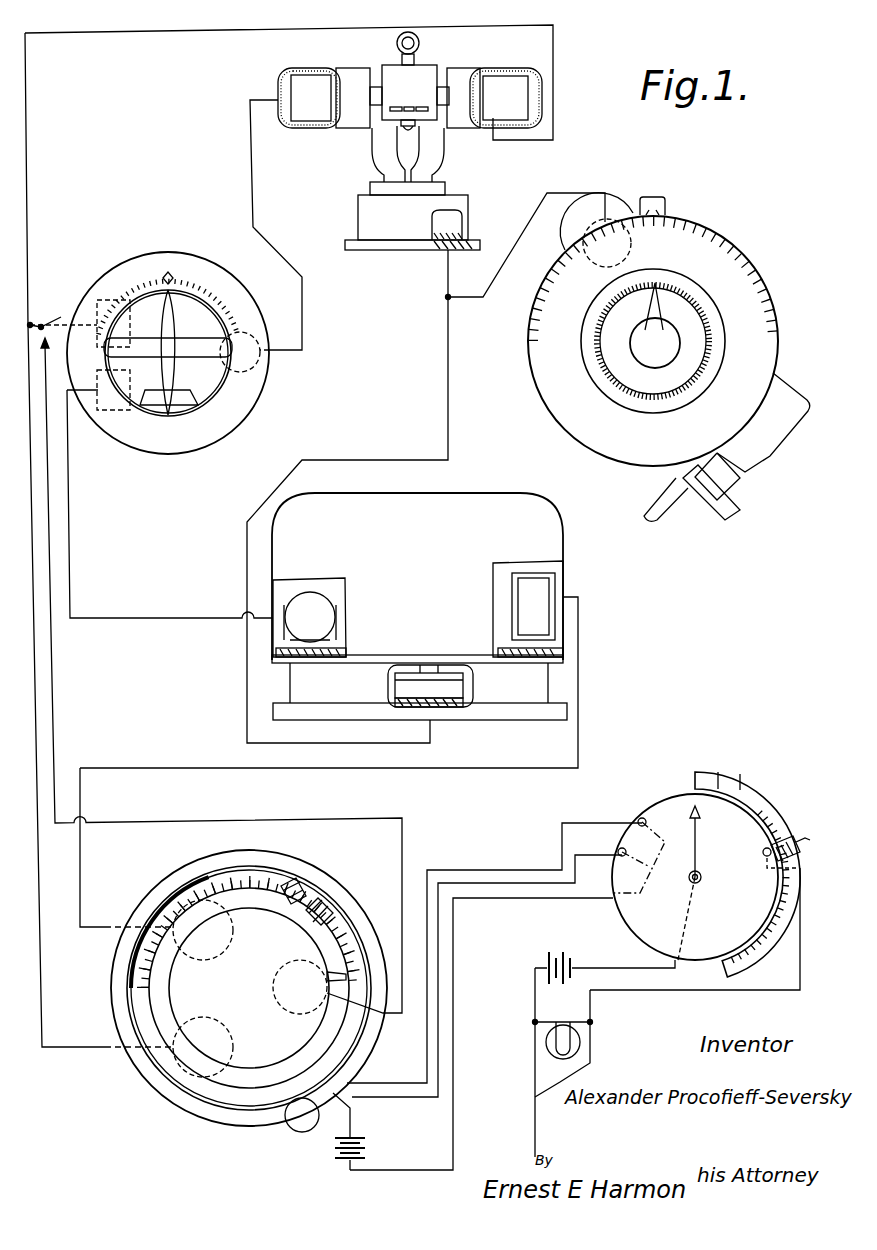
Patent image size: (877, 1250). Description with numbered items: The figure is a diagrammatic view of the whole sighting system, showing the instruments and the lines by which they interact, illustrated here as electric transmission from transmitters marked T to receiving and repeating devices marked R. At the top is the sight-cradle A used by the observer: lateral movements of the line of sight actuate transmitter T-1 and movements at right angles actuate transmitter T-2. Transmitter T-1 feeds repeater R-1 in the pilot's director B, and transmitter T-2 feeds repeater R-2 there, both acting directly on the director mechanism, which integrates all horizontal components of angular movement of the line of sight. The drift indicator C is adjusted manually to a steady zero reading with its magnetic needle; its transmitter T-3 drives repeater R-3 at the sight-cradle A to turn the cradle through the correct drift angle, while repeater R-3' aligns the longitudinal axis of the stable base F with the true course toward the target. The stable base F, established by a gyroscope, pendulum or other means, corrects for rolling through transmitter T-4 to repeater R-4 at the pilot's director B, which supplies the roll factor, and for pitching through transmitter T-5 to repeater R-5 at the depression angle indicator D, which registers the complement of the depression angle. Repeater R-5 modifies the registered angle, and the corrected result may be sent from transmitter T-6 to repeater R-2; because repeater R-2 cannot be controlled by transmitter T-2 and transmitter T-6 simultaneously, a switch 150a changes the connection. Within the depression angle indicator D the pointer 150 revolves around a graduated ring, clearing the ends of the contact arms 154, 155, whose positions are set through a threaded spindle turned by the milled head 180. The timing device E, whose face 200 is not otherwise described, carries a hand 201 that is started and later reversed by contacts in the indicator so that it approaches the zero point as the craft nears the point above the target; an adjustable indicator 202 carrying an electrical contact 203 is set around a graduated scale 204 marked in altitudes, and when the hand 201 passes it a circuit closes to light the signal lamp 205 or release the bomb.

The sight-cradle A is at (410, 127).
The pilot's director B is at (164, 653).
The drift indicator C is at (669, 346).
The depression angle indicator D is at (256, 1001).
The timing device E is at (681, 905).
The stable base F is at (419, 606).
The transmitter T-1 is at (324, 98).
The transmitter T-2 is at (494, 98).
The transmitter T-3 is at (607, 243).
The transmitter T-4 is at (309, 617).
The transmitter T-5 is at (528, 609).
The transmitter T-6 is at (309, 987).
The repeater R-1 is at (258, 365).
The repeater R-2 is at (131, 688).
The repeater R-3 is at (447, 225).
The repeater R-3' is at (430, 686).
The repeater R-4 is at (132, 398).
The repeater R-5 is at (203, 930).
The pointer 150 is at (343, 977).
The switch 150a is at (68, 305).
The contact arm 154 is at (290, 903).
The contact arm 155 is at (313, 923).
The milled head 180 is at (296, 1118).
The clock dial 200 is at (660, 805).
The hand 201 is at (703, 860).
The adjustable indicator 202 is at (812, 838).
The electrical contact 203 is at (793, 838).
The graduated scale 204 is at (758, 825).
The signal lamp 205 is at (580, 1042).